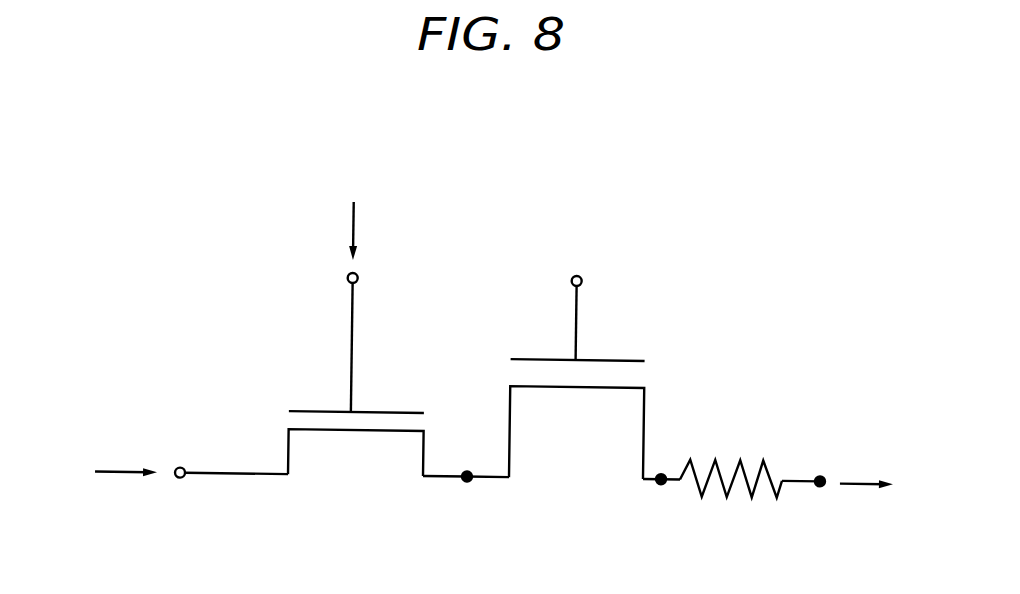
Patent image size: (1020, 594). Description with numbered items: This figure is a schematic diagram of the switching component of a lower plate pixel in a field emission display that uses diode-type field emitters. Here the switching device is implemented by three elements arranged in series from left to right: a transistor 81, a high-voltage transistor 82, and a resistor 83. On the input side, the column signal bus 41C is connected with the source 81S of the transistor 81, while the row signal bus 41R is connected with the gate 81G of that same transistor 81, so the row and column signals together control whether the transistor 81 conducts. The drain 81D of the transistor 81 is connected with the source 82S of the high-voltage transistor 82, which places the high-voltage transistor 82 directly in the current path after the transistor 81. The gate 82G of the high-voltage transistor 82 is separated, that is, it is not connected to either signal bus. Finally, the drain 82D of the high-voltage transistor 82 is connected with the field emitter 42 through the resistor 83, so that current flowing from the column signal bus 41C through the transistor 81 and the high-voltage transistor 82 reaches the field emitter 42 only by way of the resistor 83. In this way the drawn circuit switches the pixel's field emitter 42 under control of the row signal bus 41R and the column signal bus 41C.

The column signal bus 41C is at (99, 473).
The row signal bus 41R is at (352, 214).
The field emitter 42 is at (855, 481).
The transistor 81 is at (356, 454).
The source of the transistor 81S is at (226, 454).
The gate of the transistor 81G is at (357, 329).
The drain of the transistor 81D is at (441, 499).
The high-voltage transistor 82 is at (576, 432).
The source of the high-voltage transistor 82S is at (493, 497).
The gate of the high-voltage transistor 82G is at (578, 308).
The drain of the high-voltage transistor 82D is at (659, 499).
The resistor 83 is at (731, 452).